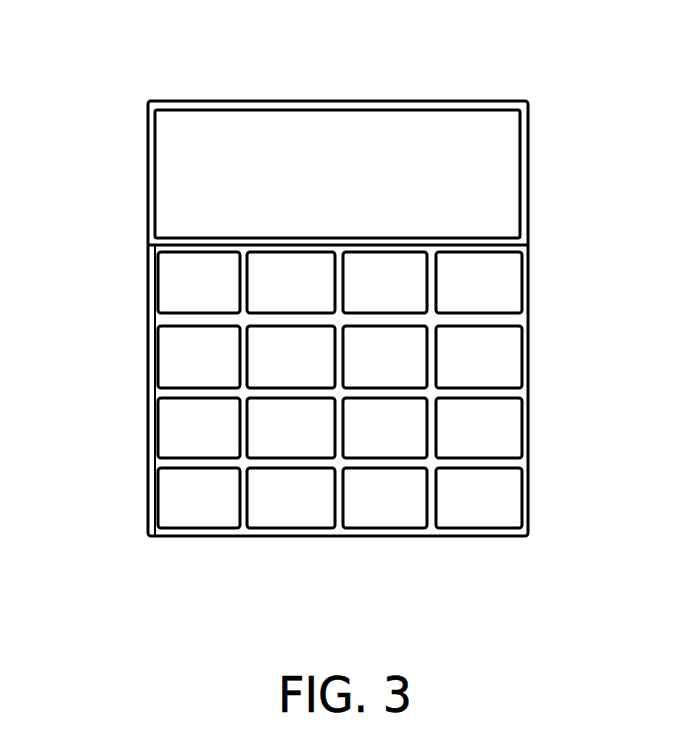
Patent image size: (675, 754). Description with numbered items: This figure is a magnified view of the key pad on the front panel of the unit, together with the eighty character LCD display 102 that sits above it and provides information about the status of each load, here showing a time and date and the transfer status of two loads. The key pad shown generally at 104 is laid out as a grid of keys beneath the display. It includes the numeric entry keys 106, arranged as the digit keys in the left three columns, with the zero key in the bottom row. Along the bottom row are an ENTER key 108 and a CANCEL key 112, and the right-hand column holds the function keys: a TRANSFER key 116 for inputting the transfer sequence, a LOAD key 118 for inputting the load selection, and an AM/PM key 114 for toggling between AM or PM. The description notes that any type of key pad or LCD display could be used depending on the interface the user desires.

The LCD display 102 is at (352, 108).
The key pad 104 is at (300, 534).
The numeric entry keys 106 is at (150, 307).
The ENTER key 108 is at (185, 530).
The CANCEL key 112 is at (493, 534).
The AM/PM key 114 is at (405, 534).
The TRANSFER key 116 is at (530, 265).
The LOAD key 118 is at (528, 353).